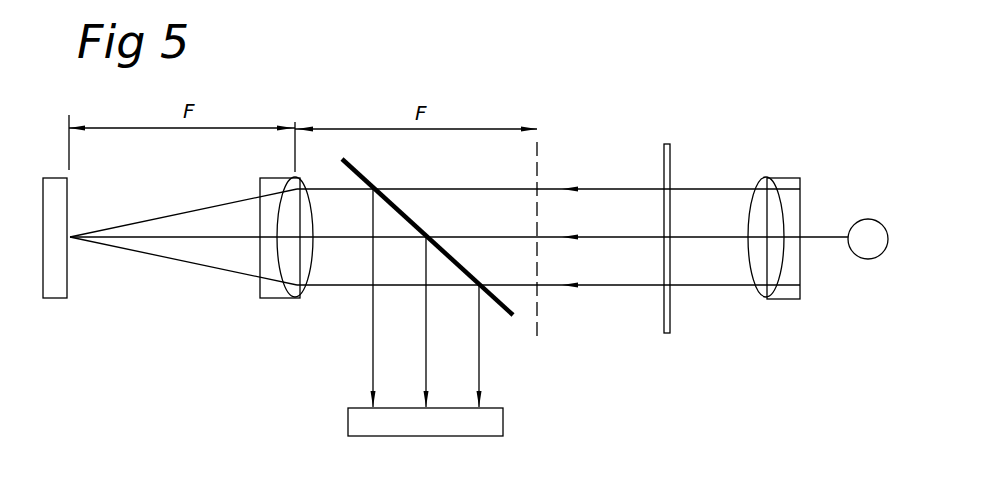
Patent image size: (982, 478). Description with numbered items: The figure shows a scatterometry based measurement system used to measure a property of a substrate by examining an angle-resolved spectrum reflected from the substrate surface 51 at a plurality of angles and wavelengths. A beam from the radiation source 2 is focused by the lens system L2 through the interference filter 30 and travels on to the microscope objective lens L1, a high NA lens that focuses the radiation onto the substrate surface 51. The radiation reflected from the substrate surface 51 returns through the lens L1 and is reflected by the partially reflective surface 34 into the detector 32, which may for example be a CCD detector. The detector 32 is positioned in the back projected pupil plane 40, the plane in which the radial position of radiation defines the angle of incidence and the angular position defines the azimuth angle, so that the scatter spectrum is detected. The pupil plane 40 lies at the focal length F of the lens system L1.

The substrate surface 51 is at (63, 275).
The microscope objective lens L1 is at (276, 180).
The partially reflective surface 34 is at (503, 312).
The pupil plane 40 is at (537, 337).
The interference filter 30 is at (667, 322).
The lens system L2 is at (786, 180).
The radiation source 2 is at (870, 231).
The detector 32 is at (360, 423).